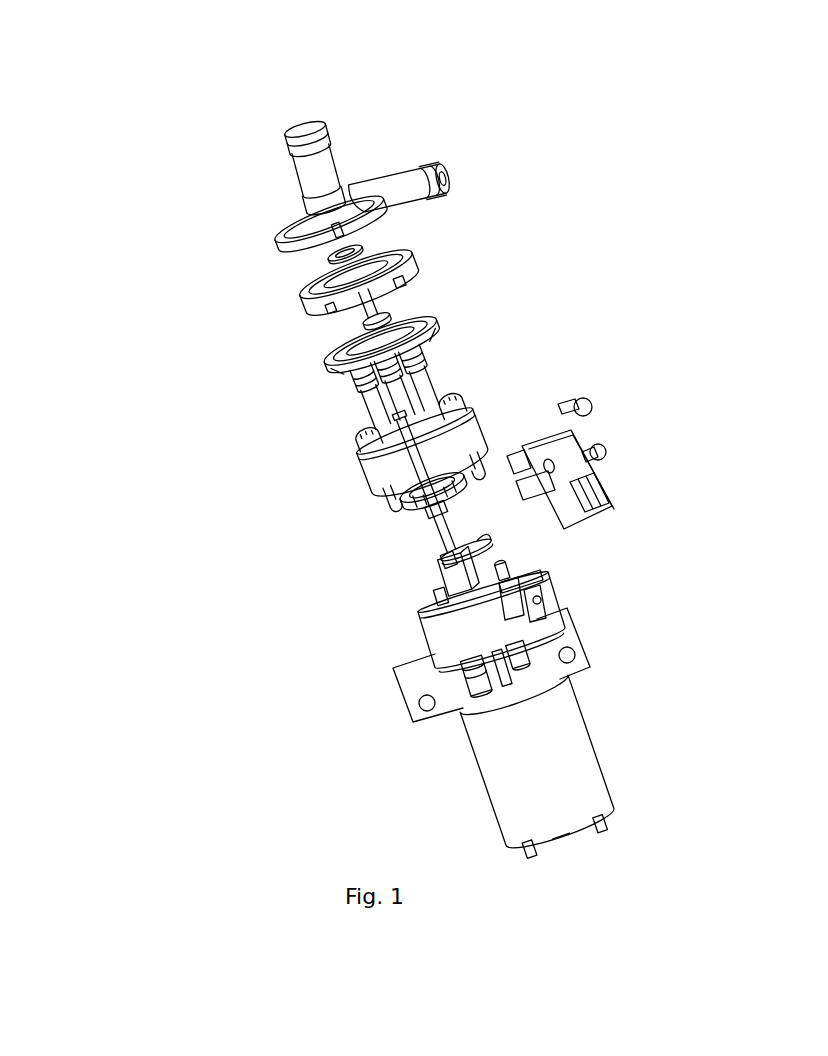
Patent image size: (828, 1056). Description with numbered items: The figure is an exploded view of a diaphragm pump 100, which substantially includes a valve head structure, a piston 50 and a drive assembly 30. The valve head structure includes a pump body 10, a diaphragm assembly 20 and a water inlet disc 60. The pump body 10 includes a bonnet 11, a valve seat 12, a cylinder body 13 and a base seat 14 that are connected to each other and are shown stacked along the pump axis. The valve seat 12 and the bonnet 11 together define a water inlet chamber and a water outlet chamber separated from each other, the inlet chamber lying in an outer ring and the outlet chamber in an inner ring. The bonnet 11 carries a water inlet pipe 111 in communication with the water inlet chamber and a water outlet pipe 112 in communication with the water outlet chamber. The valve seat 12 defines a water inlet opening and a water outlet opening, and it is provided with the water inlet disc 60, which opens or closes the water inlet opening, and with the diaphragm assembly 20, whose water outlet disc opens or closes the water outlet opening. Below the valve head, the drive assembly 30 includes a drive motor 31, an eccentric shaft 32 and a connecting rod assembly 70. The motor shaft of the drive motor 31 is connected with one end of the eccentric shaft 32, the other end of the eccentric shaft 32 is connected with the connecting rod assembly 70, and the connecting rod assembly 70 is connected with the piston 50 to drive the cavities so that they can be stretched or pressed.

The diaphragm pump 100 is at (284, 35).
The pump body 10 is at (193, 213).
The bonnet 11 is at (282, 240).
The water inlet pipe 111 is at (411, 164).
The water outlet pipe 112 is at (323, 162).
The diaphragm assembly 20 is at (362, 249).
The valve seat 12 is at (300, 299).
The water inlet disc 60 is at (380, 318).
The piston 50 is at (437, 318).
The cylinder body 13 is at (355, 452).
The connecting rod assembly 70 is at (458, 478).
The base seat 14 is at (417, 606).
The drive assembly 30 is at (643, 596).
The drive motor 31 is at (580, 758).
The eccentric shaft 32 is at (527, 586).